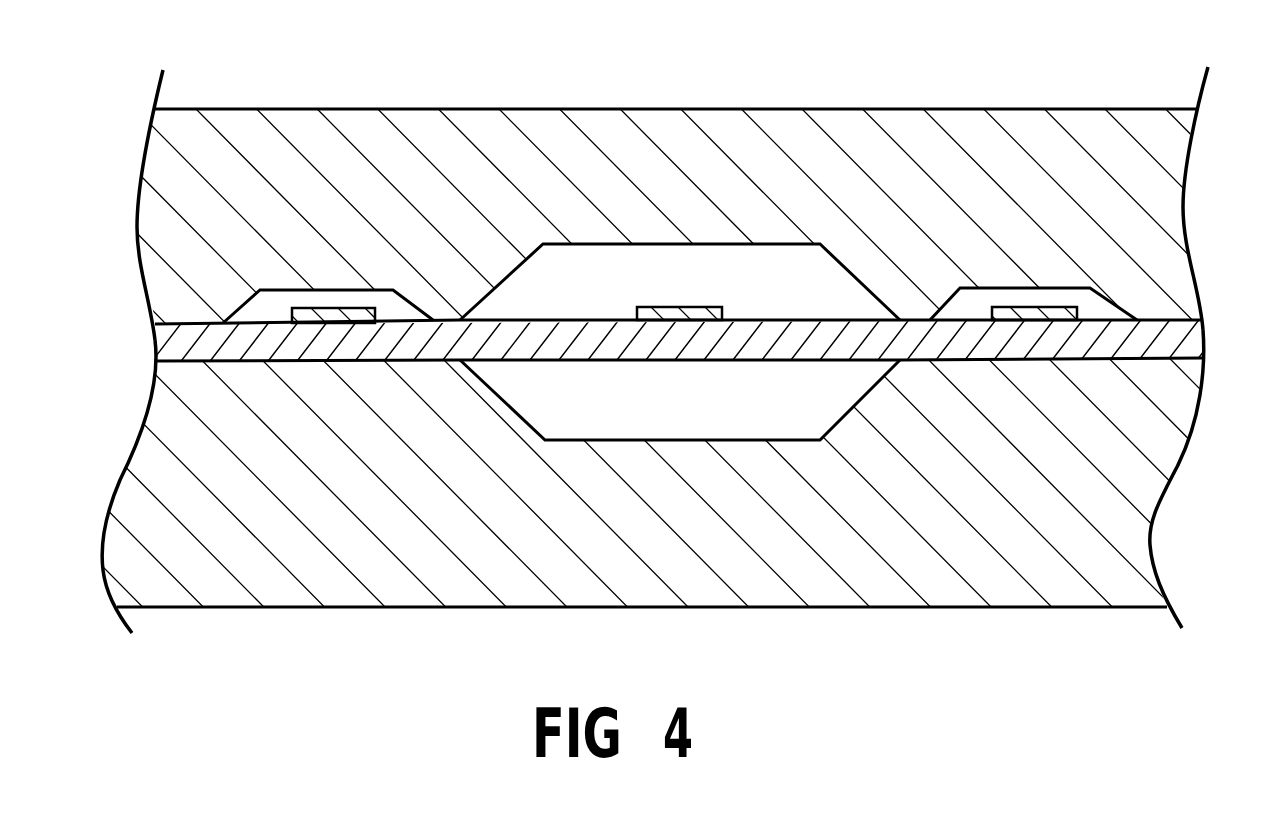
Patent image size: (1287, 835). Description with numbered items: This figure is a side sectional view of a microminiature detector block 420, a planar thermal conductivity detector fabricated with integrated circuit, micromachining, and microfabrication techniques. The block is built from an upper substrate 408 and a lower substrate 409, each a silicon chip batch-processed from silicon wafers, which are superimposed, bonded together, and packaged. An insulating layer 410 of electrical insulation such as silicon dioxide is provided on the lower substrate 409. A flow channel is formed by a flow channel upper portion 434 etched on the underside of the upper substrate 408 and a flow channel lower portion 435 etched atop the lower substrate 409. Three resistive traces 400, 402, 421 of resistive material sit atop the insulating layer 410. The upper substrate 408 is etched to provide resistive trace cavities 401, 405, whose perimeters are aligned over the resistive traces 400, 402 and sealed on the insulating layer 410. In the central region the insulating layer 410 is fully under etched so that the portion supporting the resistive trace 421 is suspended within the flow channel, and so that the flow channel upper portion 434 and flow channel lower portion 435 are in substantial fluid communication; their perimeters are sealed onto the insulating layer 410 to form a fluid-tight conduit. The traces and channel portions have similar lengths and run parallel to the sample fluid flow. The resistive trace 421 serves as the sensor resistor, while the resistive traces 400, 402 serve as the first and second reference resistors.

The resistive trace 400 is at (337, 307).
The resistive trace cavity 401 is at (393, 317).
The resistive trace 402 is at (1035, 303).
The resistive trace cavity 405 is at (942, 309).
The upper substrate 408 is at (800, 123).
The lower substrate 409 is at (730, 592).
The insulating layer 410 is at (175, 345).
The microminiature detector block 420 is at (403, 653).
The resistive trace 421 is at (738, 302).
The flow channel upper portion 434 is at (707, 282).
The flow channel lower portion 435 is at (703, 395).